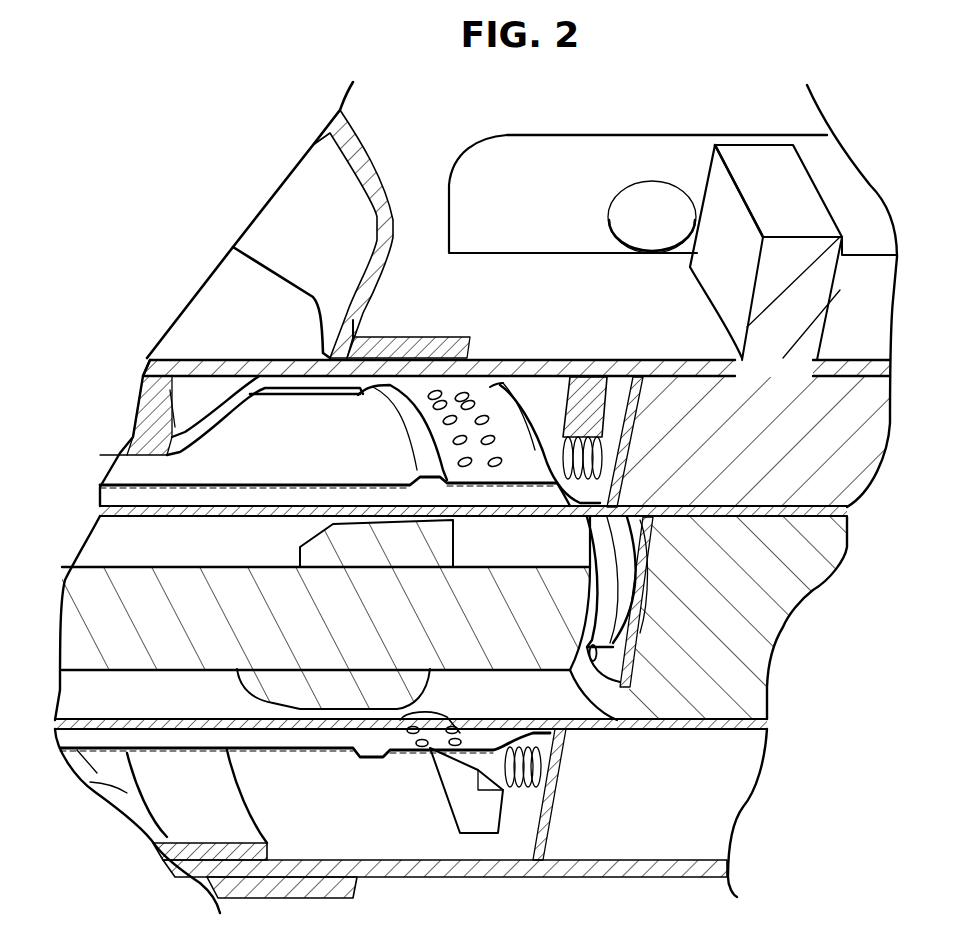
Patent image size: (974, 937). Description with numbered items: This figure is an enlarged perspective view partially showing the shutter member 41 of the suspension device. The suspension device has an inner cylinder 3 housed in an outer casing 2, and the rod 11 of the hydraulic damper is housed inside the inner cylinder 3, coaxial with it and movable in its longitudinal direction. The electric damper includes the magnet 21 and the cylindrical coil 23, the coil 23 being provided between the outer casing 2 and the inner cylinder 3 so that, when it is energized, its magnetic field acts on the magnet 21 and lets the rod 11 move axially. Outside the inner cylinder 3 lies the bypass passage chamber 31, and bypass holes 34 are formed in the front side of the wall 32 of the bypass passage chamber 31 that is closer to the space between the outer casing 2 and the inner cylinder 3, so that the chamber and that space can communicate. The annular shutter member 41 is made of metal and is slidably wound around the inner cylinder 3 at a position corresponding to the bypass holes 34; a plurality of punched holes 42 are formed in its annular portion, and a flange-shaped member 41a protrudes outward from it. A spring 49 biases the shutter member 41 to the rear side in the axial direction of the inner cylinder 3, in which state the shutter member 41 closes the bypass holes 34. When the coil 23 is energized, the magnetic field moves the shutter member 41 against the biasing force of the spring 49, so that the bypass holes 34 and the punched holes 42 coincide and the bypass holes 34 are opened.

The outer casing 2 is at (540, 360).
The inner cylinder 3 is at (777, 507).
The rod 11 is at (147, 587).
The magnet 21 is at (753, 630).
The coil 23 is at (828, 407).
The bypass passage chamber 31 is at (232, 497).
The wall 32 is at (297, 443).
The bypass holes 34 is at (415, 730).
The shutter member 41 is at (518, 430).
The flange-shaped member 41a is at (628, 287).
The punched holes 42 is at (482, 420).
The spring 49 is at (598, 447).